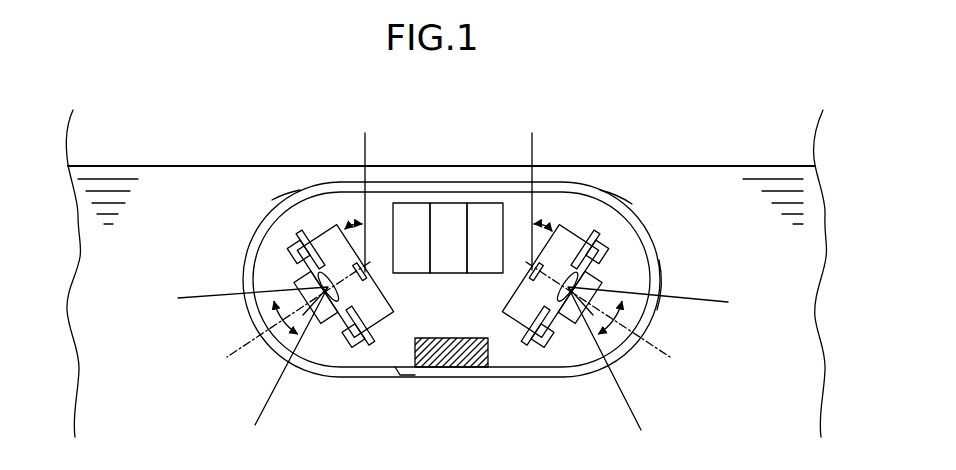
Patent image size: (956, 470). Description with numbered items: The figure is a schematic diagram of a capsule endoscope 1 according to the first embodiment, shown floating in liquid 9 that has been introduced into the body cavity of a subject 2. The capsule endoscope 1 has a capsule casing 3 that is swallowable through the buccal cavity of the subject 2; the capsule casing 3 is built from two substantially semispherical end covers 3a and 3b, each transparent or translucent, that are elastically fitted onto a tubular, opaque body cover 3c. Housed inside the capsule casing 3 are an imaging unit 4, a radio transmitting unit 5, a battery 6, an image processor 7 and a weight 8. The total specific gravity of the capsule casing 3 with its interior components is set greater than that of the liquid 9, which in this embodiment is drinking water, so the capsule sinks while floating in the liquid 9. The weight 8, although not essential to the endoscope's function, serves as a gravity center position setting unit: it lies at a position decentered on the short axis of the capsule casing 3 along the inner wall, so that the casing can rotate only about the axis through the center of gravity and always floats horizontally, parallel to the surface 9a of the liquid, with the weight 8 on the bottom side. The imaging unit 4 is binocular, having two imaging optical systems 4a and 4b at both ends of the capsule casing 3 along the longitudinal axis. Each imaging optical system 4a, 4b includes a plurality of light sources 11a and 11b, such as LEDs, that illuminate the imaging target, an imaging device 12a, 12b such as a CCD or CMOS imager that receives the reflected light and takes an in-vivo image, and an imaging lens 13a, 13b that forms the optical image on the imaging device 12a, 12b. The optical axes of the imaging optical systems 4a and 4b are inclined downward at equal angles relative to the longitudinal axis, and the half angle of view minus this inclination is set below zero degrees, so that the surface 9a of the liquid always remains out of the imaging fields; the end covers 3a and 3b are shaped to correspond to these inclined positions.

The capsule endoscope 1 is at (406, 386).
The subject 2 is at (66, 137).
The capsule casing 3 is at (391, 178).
The end cover 3a is at (657, 280).
The end cover 3b is at (281, 203).
The body cover 3c is at (587, 186).
The imaging unit 4 is at (327, 222).
The imaging optical system 4a is at (581, 228).
The imaging optical system 4b is at (381, 322).
The radio transmitting unit 5 is at (488, 202).
The battery 6 is at (451, 202).
The image processor 7 is at (413, 202).
The weight 8 is at (450, 370).
The liquid 9 is at (73, 310).
The surface of the liquid 9a is at (189, 165).
The light sources 11a is at (603, 250).
The light sources 11b is at (288, 252).
The imaging device 12a is at (524, 268).
The imaging device 12b is at (372, 268).
The imaging lens 13a is at (574, 283).
The imaging lens 13b is at (327, 301).